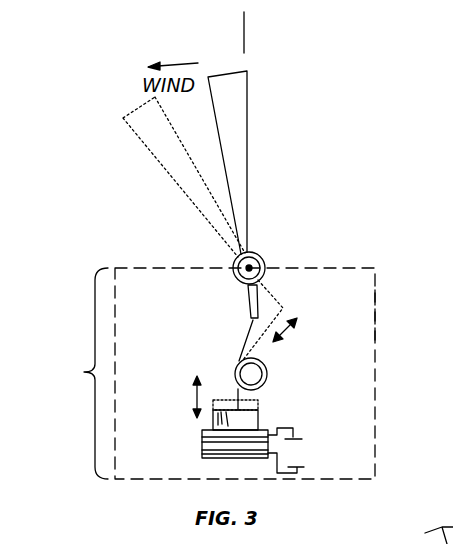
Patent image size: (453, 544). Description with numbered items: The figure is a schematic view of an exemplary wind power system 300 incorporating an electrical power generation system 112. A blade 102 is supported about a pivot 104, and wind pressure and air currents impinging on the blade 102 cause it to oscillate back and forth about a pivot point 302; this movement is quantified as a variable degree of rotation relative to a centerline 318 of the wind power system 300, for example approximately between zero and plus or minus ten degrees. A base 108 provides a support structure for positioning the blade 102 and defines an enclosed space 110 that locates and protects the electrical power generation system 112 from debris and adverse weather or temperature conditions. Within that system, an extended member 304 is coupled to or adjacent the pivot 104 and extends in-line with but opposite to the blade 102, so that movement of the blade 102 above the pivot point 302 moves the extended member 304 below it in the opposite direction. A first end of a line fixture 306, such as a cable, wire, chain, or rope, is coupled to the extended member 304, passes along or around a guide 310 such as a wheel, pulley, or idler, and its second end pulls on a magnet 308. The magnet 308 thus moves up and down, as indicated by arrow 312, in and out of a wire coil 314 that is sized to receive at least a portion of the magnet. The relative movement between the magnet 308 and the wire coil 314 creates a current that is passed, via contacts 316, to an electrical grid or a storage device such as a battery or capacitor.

The blade 102 is at (246, 128).
The pivot 104 is at (234, 278).
The base 108 is at (318, 268).
The space 110 is at (356, 313).
The electrical power generation system 112 is at (75, 373).
The wind power system 300 is at (344, 161).
The pivot point 302 is at (253, 253).
The extended member 304 is at (253, 303).
The line fixture 306 is at (242, 350).
The magnet 308 is at (259, 412).
The guide 310 is at (267, 371).
The arrow 312 is at (193, 392).
The wire coil 314 is at (202, 443).
The contacts 316 is at (293, 430).
The centerline 318 is at (244, 32).